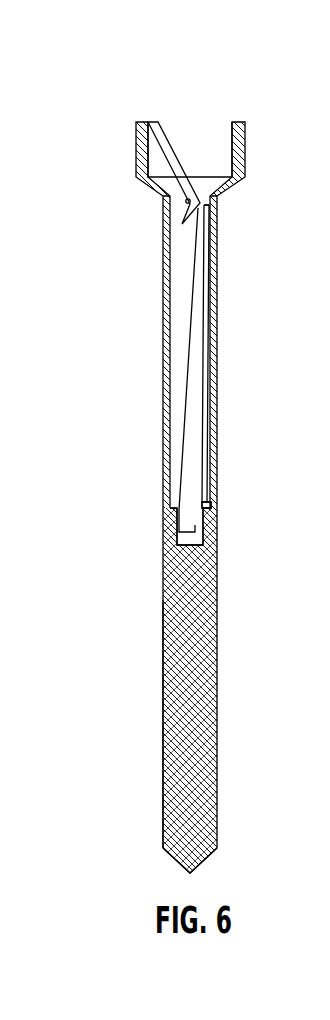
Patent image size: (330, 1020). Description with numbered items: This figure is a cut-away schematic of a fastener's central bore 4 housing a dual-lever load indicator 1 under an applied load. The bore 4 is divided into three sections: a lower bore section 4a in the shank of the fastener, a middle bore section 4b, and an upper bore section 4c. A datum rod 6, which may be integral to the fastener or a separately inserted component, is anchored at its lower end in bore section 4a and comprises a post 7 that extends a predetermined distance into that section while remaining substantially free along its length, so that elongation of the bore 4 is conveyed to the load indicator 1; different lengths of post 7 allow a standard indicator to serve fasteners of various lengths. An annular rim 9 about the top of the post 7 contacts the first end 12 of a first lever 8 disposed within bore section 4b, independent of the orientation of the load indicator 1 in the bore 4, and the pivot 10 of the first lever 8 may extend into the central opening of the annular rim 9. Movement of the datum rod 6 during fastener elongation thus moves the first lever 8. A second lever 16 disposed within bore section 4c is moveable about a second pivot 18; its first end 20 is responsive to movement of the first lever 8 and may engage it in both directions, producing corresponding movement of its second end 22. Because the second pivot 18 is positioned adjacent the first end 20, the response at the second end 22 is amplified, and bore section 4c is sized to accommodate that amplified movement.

The load indicator 1 is at (78, 108).
The bore 4 is at (163, 301).
The bore section 4a is at (167, 717).
The bore section 4b is at (163, 415).
The bore section 4c is at (141, 155).
The datum rod 6 is at (210, 660).
The post 7 is at (218, 770).
The first lever 8 is at (205, 376).
The annular rim 9 is at (165, 520).
The pivot 10 is at (192, 510).
The first end 12 is at (210, 502).
The second lever 16 is at (170, 152).
The second pivot 18 is at (185, 204).
The first end 20 is at (207, 205).
The second end 22 is at (150, 121).